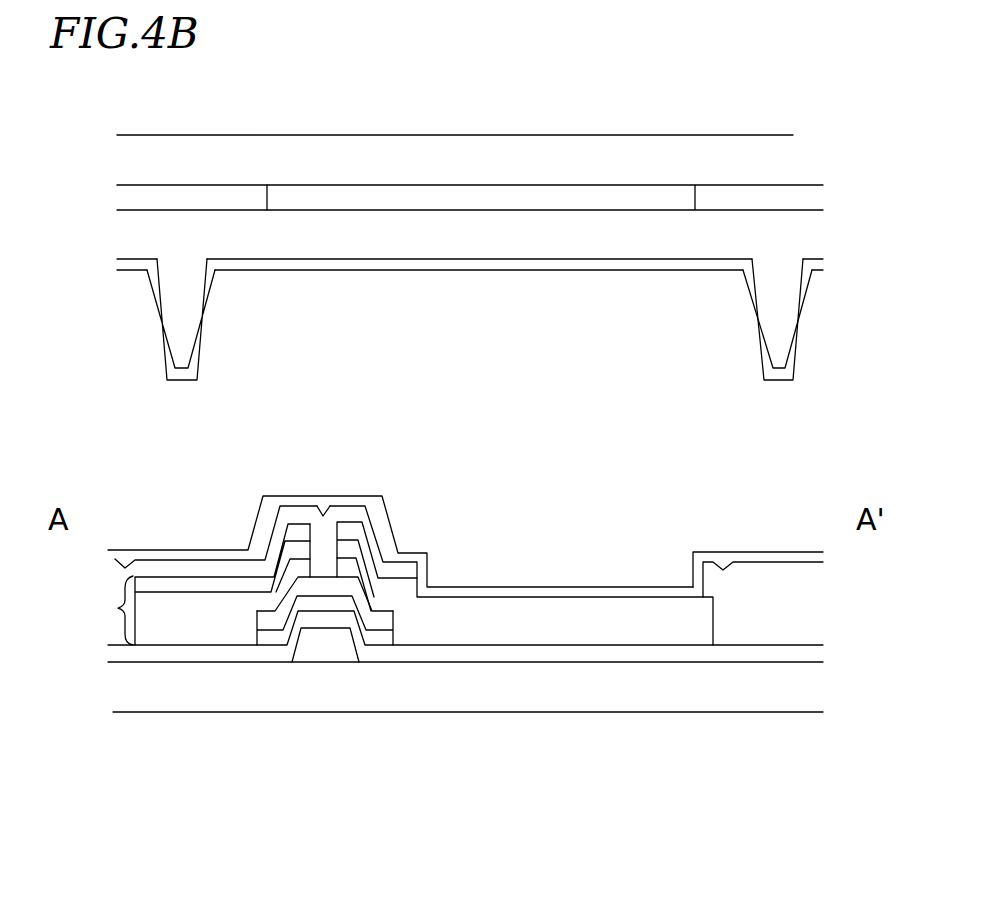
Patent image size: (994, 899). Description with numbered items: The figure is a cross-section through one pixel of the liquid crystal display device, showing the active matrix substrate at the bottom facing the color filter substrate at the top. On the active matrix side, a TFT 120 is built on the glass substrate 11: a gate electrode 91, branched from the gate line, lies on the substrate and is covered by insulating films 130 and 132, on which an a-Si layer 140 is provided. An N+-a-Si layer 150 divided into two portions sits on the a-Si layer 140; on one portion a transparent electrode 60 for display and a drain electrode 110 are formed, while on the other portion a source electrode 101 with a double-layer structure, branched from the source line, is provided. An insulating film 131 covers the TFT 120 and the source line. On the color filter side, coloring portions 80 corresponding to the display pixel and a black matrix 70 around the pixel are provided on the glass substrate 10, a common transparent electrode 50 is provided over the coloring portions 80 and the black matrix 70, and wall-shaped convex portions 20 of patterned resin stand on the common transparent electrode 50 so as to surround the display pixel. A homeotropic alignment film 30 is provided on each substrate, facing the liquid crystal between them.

The glass substrate 10 is at (337, 145).
The black matrix 70 is at (240, 197).
The coloring portions 80 is at (415, 197).
The common transparent electrode 50 is at (665, 225).
The wall-shaped convex portions 20 is at (770, 268).
The homeotropic alignment film 30 is at (795, 345).
The glass substrate 11 is at (153, 700).
The gate electrode 91 is at (320, 645).
The insulating film 130 is at (294, 605).
The insulating film 132 is at (334, 626).
The a-Si layer 140 is at (342, 583).
The N+-a-Si layer 150 is at (298, 566).
The source electrode 101 is at (188, 584).
The transparent electrode 60 is at (342, 548).
The TFT 120 is at (335, 450).
The insulating film 131 is at (322, 537).
The drain electrode 110 is at (297, 530).